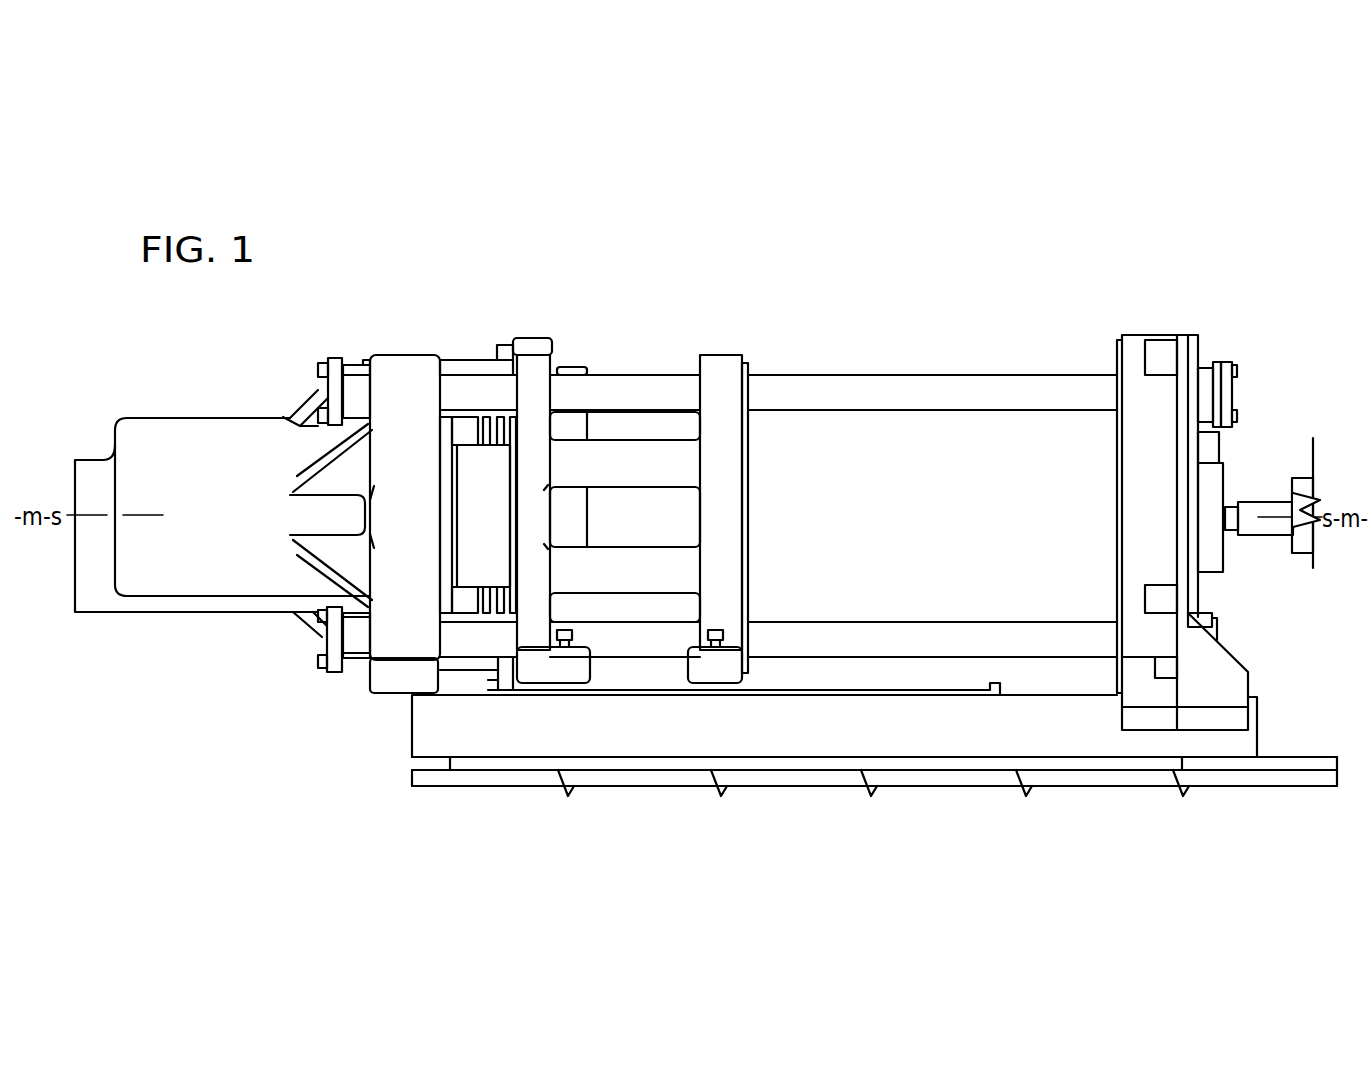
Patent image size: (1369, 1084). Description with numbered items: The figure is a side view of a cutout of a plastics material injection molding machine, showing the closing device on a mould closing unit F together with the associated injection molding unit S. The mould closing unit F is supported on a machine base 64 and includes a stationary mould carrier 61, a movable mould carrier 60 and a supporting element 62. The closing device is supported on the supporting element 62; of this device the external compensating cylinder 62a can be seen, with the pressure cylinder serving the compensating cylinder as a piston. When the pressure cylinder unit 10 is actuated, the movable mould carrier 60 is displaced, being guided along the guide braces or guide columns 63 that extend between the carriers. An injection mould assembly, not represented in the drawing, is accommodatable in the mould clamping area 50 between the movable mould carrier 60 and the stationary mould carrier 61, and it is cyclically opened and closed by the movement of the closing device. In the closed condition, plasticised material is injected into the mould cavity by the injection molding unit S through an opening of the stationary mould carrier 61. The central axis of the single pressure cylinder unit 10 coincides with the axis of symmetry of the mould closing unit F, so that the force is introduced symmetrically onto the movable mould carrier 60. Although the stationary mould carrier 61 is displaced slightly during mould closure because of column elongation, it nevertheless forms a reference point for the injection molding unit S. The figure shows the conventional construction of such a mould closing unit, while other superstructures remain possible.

The pressure cylinder unit 10 is at (495, 528).
The mould clamping area 50 is at (1015, 511).
The movable mould carrier 60 is at (715, 372).
The stationary mould carrier 61 is at (1130, 357).
The supporting element 62 is at (410, 372).
The compensating cylinder 62a is at (168, 448).
The guide columns 63 is at (474, 395).
The machine base 64 is at (845, 740).
The mould closing unit F is at (480, 317).
The injection molding unit S is at (1255, 515).